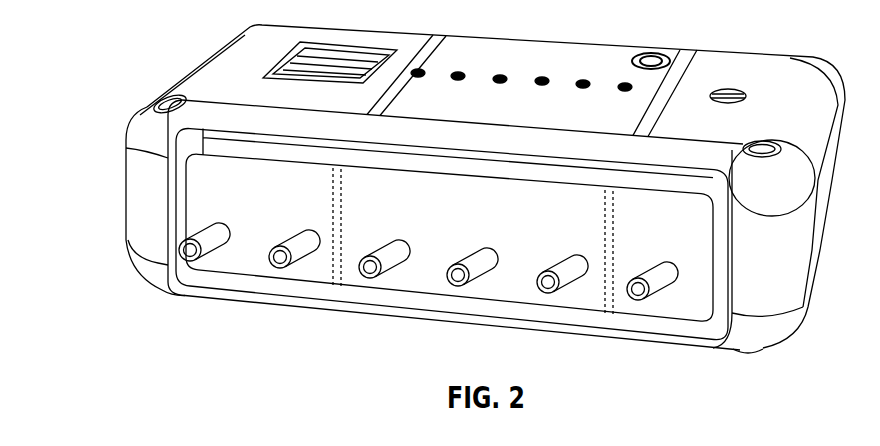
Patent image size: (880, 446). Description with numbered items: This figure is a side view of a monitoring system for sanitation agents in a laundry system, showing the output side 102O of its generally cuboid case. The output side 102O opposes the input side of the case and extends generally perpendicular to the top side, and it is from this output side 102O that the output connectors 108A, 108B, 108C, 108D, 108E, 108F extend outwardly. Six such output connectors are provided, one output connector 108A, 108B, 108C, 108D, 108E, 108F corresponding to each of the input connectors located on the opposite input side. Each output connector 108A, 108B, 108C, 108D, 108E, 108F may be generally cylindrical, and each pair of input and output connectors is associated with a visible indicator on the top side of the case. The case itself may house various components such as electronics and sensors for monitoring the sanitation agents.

The output side 102O is at (228, 203).
The output connector 108A is at (178, 266).
The output connector 108B is at (279, 277).
The output connector 108C is at (366, 286).
The output connector 108D is at (446, 296).
The output connector 108E is at (541, 303).
The output connector 108F is at (645, 313).